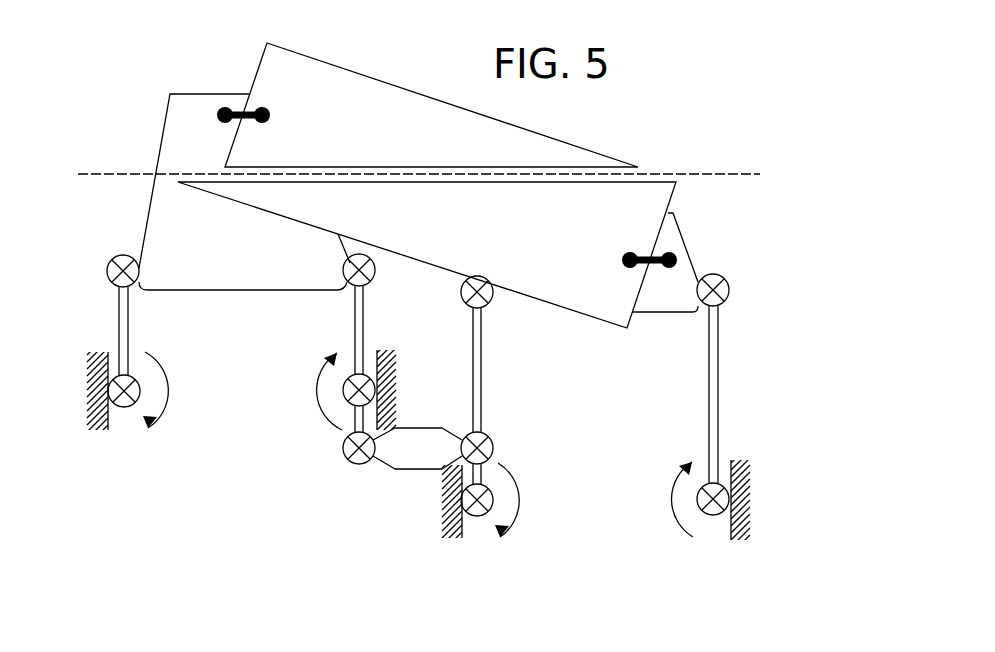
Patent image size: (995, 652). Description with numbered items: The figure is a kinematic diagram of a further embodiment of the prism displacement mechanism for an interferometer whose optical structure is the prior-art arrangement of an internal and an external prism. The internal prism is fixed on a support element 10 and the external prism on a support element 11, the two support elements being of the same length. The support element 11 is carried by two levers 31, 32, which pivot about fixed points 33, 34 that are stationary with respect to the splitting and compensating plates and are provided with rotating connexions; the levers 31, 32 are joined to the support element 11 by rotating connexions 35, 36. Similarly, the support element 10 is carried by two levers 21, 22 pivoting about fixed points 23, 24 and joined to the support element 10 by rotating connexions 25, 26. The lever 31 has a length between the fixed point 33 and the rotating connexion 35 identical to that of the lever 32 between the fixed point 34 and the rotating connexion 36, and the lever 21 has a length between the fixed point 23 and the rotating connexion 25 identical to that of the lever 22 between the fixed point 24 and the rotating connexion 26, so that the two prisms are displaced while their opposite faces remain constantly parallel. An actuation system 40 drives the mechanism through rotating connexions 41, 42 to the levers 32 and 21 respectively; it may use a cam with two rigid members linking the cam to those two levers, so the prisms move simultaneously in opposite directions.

The support element 10 is at (655, 290).
The support element 11 is at (192, 110).
The lever 21 is at (483, 362).
The lever 22 is at (720, 330).
The fixed point 23 is at (428, 503).
The fixed point 24 is at (764, 510).
The rotating connexion 25 is at (462, 298).
The rotating connexion 26 is at (718, 273).
The lever 31 is at (118, 310).
The lever 32 is at (356, 323).
The fixed point 33 is at (74, 401).
The fixed point 34 is at (410, 392).
The rotating connexion 35 is at (117, 253).
The rotating connexion 36 is at (377, 280).
The actuation system 40 is at (417, 448).
The rotating connexion 41 is at (345, 455).
The rotating connexion 42 is at (493, 443).